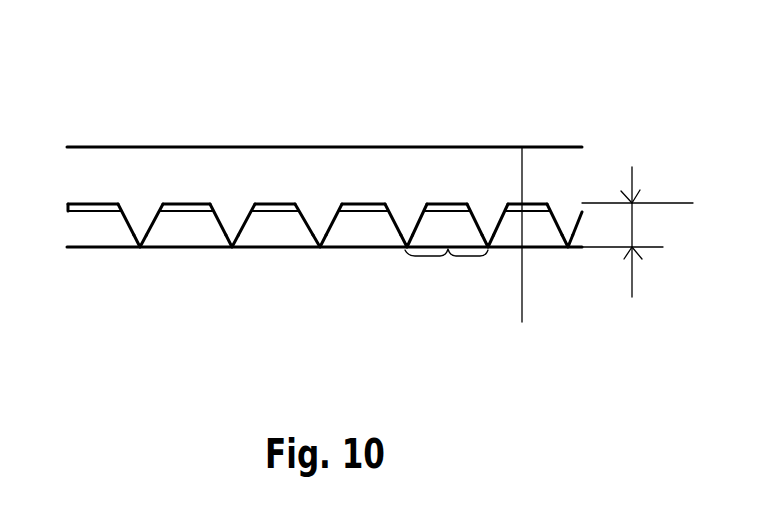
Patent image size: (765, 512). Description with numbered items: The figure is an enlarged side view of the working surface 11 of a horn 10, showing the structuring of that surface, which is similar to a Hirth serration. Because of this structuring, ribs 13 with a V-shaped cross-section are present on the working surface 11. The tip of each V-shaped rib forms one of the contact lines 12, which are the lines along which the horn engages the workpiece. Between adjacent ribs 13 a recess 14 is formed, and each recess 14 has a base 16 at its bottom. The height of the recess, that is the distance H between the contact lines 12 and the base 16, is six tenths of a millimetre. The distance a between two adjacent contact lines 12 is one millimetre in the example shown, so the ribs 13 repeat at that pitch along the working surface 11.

The corrugated board / top liner 10 is at (282, 168).
The working surface 11 is at (101, 248).
The contact lines 12 is at (140, 248).
The ribs 13 is at (137, 215).
The recess 14 is at (263, 218).
The base 16 is at (283, 213).
The distance between two adjacent contact lines a is at (446, 273).
The distance between the contact lines and the base H is at (661, 230).